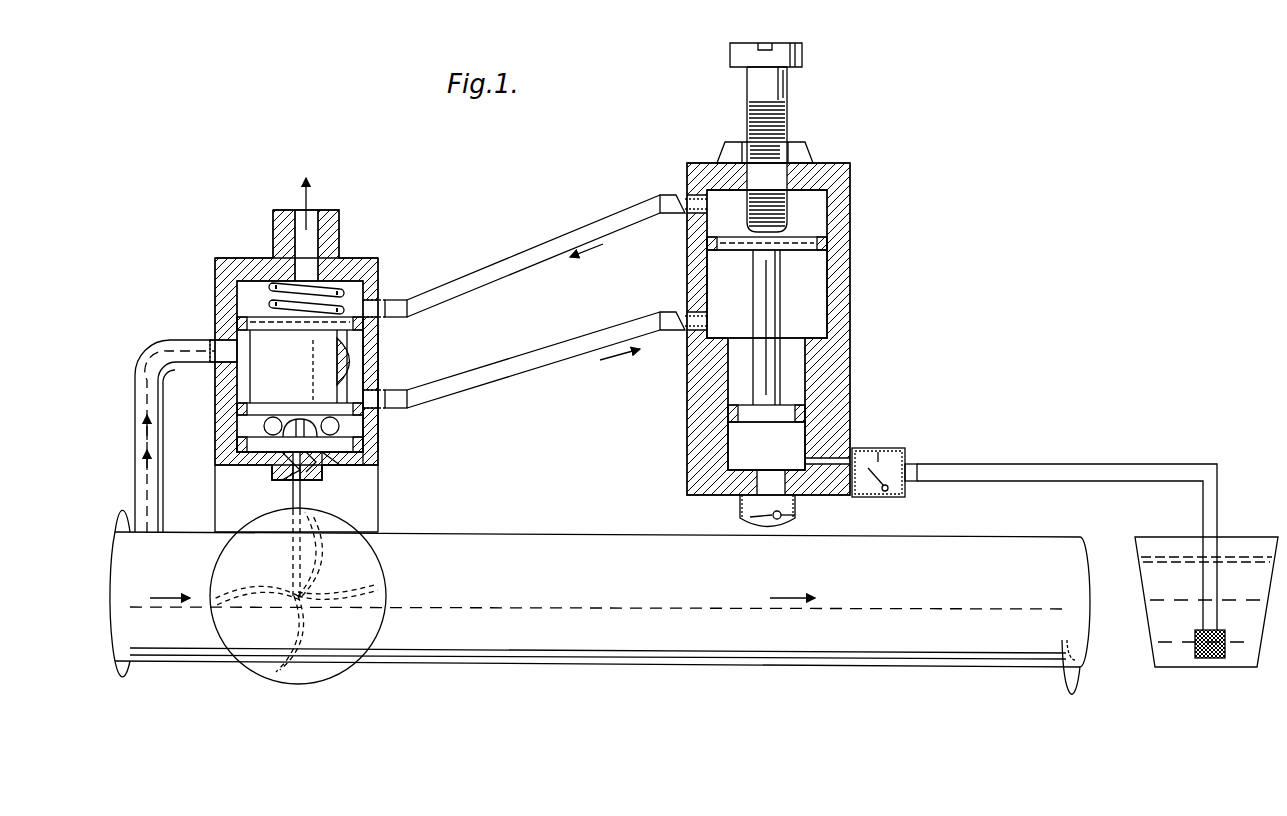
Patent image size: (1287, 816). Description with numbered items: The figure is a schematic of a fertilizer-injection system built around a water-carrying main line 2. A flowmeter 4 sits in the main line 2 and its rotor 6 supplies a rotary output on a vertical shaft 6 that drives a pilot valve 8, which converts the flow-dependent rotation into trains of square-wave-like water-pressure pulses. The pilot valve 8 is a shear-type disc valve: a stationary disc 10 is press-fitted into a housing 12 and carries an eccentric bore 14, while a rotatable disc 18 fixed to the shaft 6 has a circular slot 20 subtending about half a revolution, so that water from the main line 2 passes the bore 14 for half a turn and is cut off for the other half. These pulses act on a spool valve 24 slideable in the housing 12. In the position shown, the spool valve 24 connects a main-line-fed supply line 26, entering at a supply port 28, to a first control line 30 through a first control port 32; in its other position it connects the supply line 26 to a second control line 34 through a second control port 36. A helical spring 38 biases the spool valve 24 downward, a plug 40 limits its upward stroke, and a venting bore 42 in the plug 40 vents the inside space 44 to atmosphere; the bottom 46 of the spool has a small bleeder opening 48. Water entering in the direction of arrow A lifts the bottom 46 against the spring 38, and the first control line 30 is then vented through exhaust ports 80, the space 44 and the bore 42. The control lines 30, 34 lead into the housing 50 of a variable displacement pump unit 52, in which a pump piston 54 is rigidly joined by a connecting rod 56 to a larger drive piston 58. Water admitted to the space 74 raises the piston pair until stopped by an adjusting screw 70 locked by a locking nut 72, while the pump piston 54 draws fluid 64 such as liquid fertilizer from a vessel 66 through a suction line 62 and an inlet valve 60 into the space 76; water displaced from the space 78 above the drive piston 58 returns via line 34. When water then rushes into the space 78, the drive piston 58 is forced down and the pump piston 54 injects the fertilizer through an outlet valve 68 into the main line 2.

The main line 2 is at (578, 540).
The flowmeter 4 is at (248, 670).
The rotor / output shaft 6 is at (303, 497).
The pilot valve 8 is at (232, 487).
The stationary disc 10 is at (335, 467).
The housing 12 is at (372, 442).
The eccentric bore 14 is at (237, 444).
The rotatable disc 18 is at (328, 474).
The circular slot 20 is at (280, 482).
The spool valve 24 is at (237, 372).
The supply line 26 is at (160, 340).
The supply port 28 is at (218, 345).
The first control line 30 is at (565, 357).
The first control port 32 is at (388, 392).
The second control line 34 is at (565, 238).
The second control port 36 is at (388, 302).
The helical spring 38 is at (270, 282).
The plug 40 is at (332, 224).
The venting bore 42 is at (305, 260).
The inside space 44 is at (345, 355).
The bottom 46 is at (363, 428).
The bleeder opening 48 is at (300, 416).
The pump housing 50 is at (838, 382).
The pump unit 52 is at (809, 269).
The pump piston 54 is at (737, 410).
The connecting rod 56 is at (778, 288).
The drive piston 58 is at (807, 238).
The inlet valve 60 is at (898, 448).
The suction line 62 is at (1040, 463).
The fluid 64 is at (1250, 563).
The vessel 66 is at (1133, 547).
The outlet valve 68 is at (770, 520).
The adjusting screw 70 is at (790, 90).
The locking nut 72 is at (811, 148).
The space 74 is at (725, 290).
The space 76 is at (740, 450).
The space 78 is at (736, 192).
The exhaust ports 80 is at (262, 424).
The arrow A is at (283, 495).